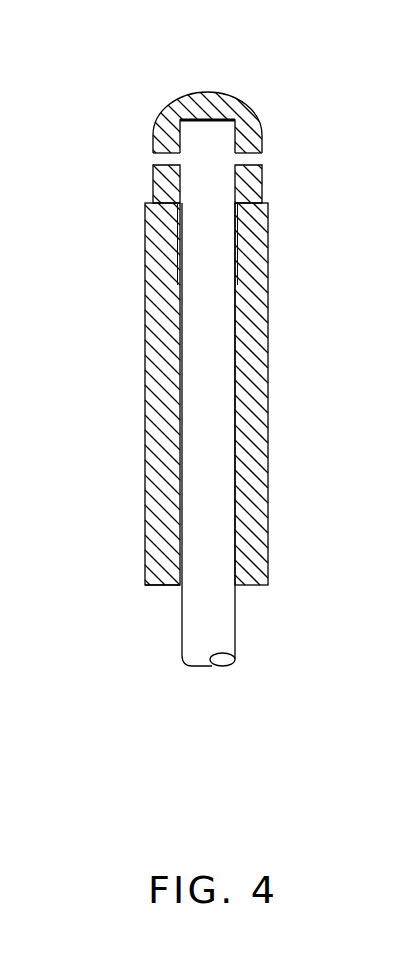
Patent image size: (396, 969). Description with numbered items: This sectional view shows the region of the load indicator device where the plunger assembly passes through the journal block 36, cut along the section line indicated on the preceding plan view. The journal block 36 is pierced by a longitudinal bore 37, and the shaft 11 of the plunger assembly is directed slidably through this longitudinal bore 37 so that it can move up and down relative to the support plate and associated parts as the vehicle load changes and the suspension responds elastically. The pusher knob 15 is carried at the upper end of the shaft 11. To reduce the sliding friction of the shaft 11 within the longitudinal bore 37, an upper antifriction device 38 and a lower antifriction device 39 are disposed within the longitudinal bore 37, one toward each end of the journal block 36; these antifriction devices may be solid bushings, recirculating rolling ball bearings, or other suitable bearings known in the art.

The shaft 11 is at (210, 618).
The pusher knob 15 is at (207, 110).
The journal block 36 is at (260, 373).
The longitudinal bore 37 is at (168, 350).
The upper antifriction device 38 is at (172, 222).
The lower antifriction device 39 is at (175, 585).